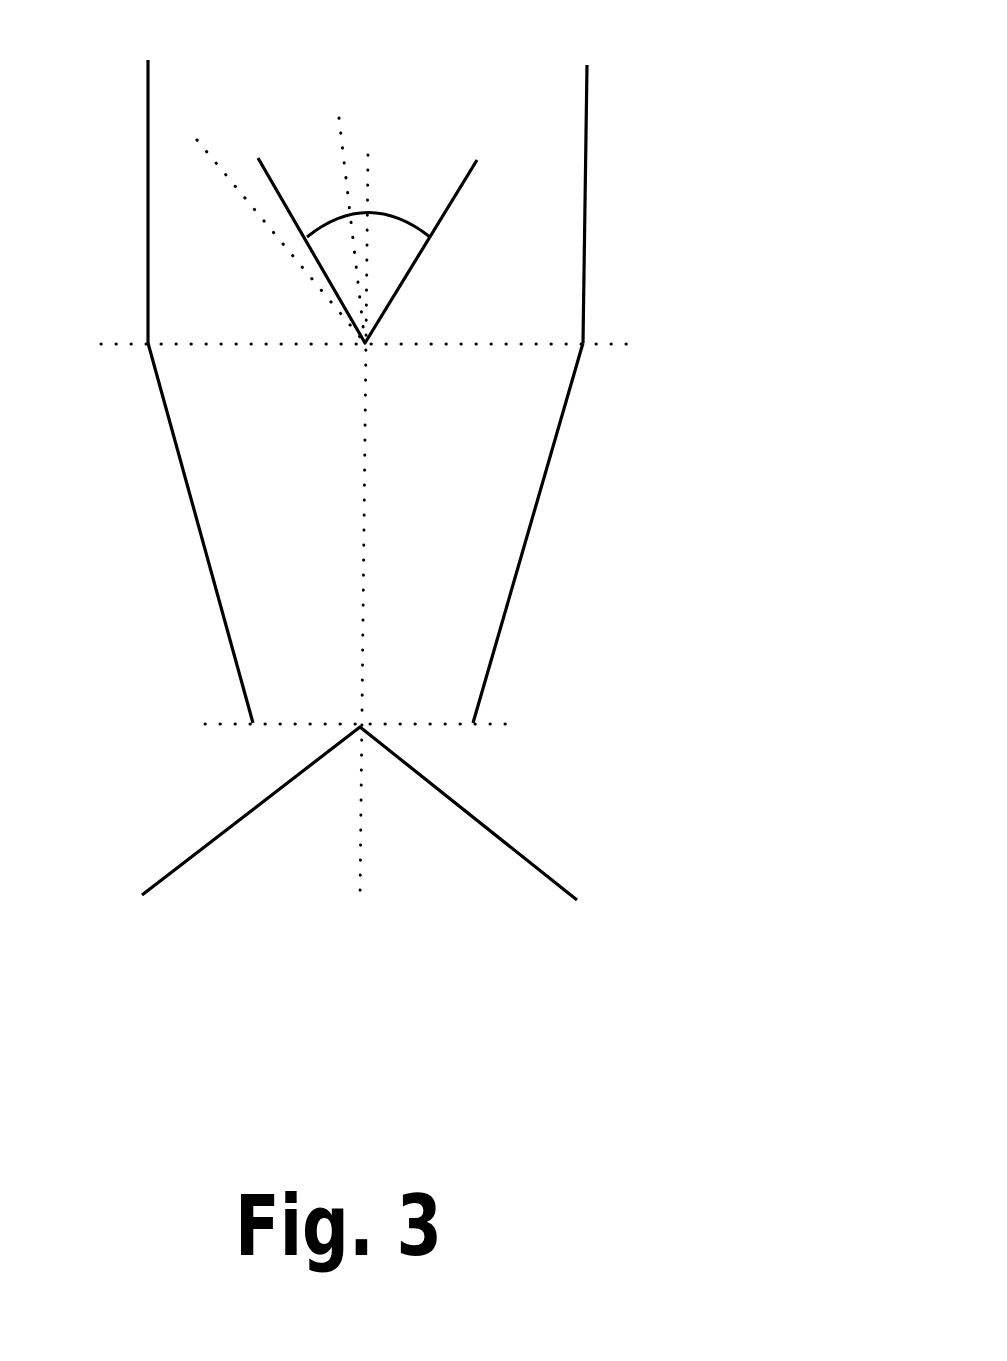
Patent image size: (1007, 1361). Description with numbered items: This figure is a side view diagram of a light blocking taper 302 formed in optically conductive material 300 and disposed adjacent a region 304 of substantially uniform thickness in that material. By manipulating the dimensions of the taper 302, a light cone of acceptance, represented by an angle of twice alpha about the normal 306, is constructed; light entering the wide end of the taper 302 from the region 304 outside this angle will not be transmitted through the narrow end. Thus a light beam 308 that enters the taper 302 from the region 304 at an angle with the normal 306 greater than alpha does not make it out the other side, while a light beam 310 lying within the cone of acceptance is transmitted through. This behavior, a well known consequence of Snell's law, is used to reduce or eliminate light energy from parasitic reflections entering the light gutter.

The optically conductive material 300 is at (772, 240).
The light blocking taper 302 is at (213, 588).
The region of substantially uniform thickness 304 is at (147, 258).
The normal 306 is at (367, 248).
The light beam 308 is at (217, 163).
The light beam 310 is at (339, 110).